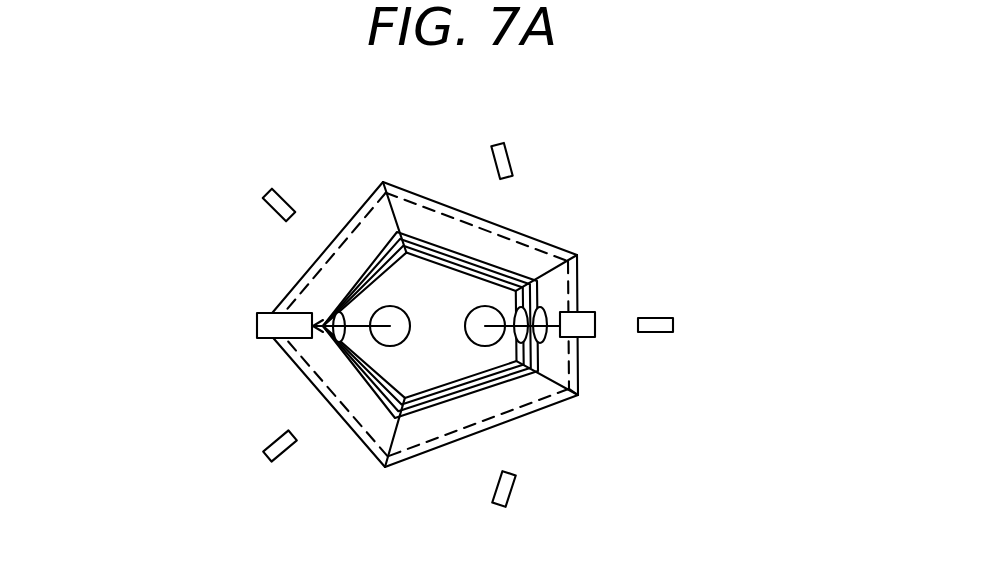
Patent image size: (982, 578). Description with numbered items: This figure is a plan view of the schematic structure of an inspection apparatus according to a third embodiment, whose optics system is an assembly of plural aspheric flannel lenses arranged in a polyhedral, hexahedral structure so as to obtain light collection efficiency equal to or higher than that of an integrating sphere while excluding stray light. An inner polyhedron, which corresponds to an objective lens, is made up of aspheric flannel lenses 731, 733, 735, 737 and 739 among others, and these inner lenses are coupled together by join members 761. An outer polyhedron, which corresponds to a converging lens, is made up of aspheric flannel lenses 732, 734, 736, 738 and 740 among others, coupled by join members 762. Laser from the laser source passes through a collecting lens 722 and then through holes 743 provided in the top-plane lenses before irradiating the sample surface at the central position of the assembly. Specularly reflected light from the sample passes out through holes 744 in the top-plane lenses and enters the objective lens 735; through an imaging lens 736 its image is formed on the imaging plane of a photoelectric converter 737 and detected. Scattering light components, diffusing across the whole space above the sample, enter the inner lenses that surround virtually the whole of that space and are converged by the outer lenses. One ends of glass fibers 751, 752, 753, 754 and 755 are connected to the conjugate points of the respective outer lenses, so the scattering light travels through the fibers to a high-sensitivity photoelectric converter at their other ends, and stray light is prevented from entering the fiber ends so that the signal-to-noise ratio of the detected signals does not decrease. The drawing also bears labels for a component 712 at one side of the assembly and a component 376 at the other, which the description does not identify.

The light source unit 712 is at (257, 325).
The light receiving unit 376 is at (593, 310).
The collecting lens 722 is at (330, 338).
The holes 743 is at (387, 307).
The holes 744 is at (494, 304).
The aspheric flannel lens 731 is at (560, 246).
The aspheric flannel lens 732 is at (580, 253).
The aspheric flannel lens 733 is at (580, 360).
The aspheric flannel lens 734 is at (580, 390).
The aspheric flannel lens 735 is at (582, 263).
The aspheric flannel lens 736 is at (490, 432).
The aspheric flannel lens 737 is at (330, 413).
The aspheric flannel lens 738 is at (360, 448).
The aspheric flannel lens 739 is at (297, 283).
The aspheric flannel lens 740 is at (313, 260).
The join members 761 is at (452, 263).
The join members 762 is at (421, 247).
The glass fiber 751 is at (511, 156).
The glass fiber 752 is at (673, 325).
The glass fiber 753 is at (514, 487).
The glass fiber 754 is at (264, 453).
The glass fiber 755 is at (266, 196).